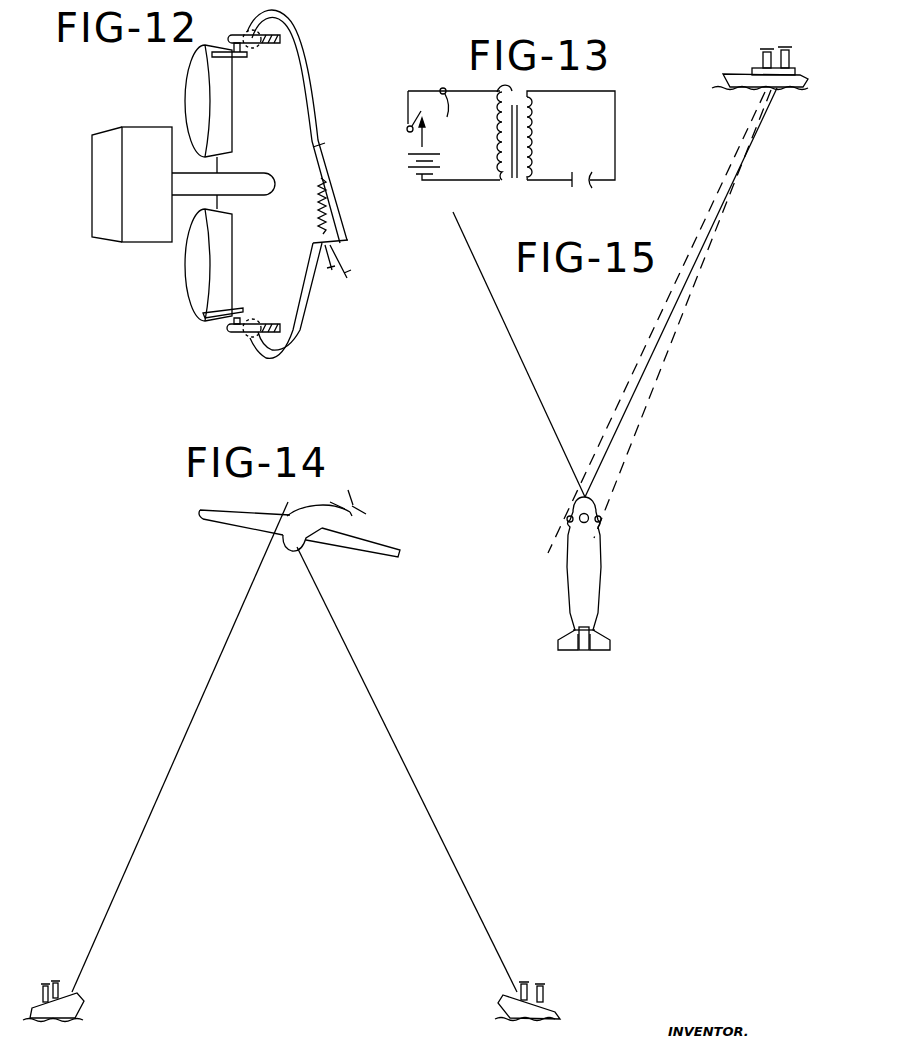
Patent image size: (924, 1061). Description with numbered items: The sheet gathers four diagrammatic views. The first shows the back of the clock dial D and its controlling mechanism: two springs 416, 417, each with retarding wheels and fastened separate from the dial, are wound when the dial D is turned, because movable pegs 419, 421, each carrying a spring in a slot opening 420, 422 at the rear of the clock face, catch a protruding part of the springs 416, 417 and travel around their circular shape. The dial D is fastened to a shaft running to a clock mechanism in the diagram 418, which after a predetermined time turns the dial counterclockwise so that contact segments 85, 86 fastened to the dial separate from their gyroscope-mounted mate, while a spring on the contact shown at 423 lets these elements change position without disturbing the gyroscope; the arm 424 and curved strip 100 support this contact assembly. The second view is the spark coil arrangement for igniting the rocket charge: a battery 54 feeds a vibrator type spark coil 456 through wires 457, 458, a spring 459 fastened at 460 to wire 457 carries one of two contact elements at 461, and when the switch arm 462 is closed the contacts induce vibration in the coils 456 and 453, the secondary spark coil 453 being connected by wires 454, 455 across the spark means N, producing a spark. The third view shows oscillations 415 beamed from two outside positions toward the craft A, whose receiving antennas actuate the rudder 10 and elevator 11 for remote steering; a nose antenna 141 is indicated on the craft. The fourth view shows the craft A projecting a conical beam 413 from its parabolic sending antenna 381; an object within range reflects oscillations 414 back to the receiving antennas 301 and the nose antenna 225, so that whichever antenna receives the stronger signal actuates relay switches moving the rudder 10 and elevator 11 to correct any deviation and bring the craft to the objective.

In FIG. 12, the spring 416 is at (192, 80).
In FIG. 12, the spring 417 is at (196, 276).
In FIG. 12, the clock mechanism diagram 418 is at (110, 226).
In FIG. 12, the movable peg 419 is at (236, 338).
In FIG. 12, the slot opening 420 is at (255, 320).
In FIG. 12, the movable peg 421 is at (249, 44).
In FIG. 12, the slot opening 422 is at (275, 43).
In FIG. 12, the spring on contact 423 is at (320, 203).
In FIG. 12, the support arm 424 is at (234, 186).
In FIG. 12, the curved strip 100 is at (303, 75).
In FIG. 12, the clock dial D is at (323, 122).
In FIG. 12, the contact segment 85 is at (346, 272).
In FIG. 12, the contact segment 86 is at (331, 271).
In FIG. 13, the wire 457 is at (423, 88).
In FIG. 13, the spring 459 is at (446, 90).
In FIG. 13, the switch arm 462 is at (408, 114).
In FIG. 13, the fastening point 460 is at (438, 132).
In FIG. 13, the battery 54 is at (404, 172).
In FIG. 13, the contact elements 461 is at (493, 89).
In FIG. 13, the vibrator type spark coil 456 is at (499, 147).
In FIG. 13, the secondary spark coil 453 is at (536, 153).
In FIG. 13, the wire 454 is at (601, 88).
In FIG. 13, the wire 458 is at (464, 182).
In FIG. 13, the wire 455 is at (541, 184).
In FIG. 13, the spark means N is at (586, 183).
In FIG. 15, the conical beam 413 is at (513, 336).
In FIG. 15, the reflected oscillations 414 is at (643, 349).
In FIG. 15, the parabolic sending antenna 381 is at (583, 482).
In FIG. 15, the parabolic receiving antenna 301 is at (565, 519).
In FIG. 15, the parabolic receiving antenna 225 is at (589, 526).
In FIG. 15, the craft A is at (589, 573).
In FIG. 14, the craft A is at (323, 520).
In FIG. 15, the rudder 10 is at (585, 651).
In FIG. 14, the rudder 10 is at (351, 498).
In FIG. 15, the elevator 11 is at (606, 643).
In FIG. 14, the elevator 11 is at (366, 511).
In FIG. 14, the nose sensor 141 is at (301, 548).
In FIG. 14, the oscillations 415 is at (162, 805).